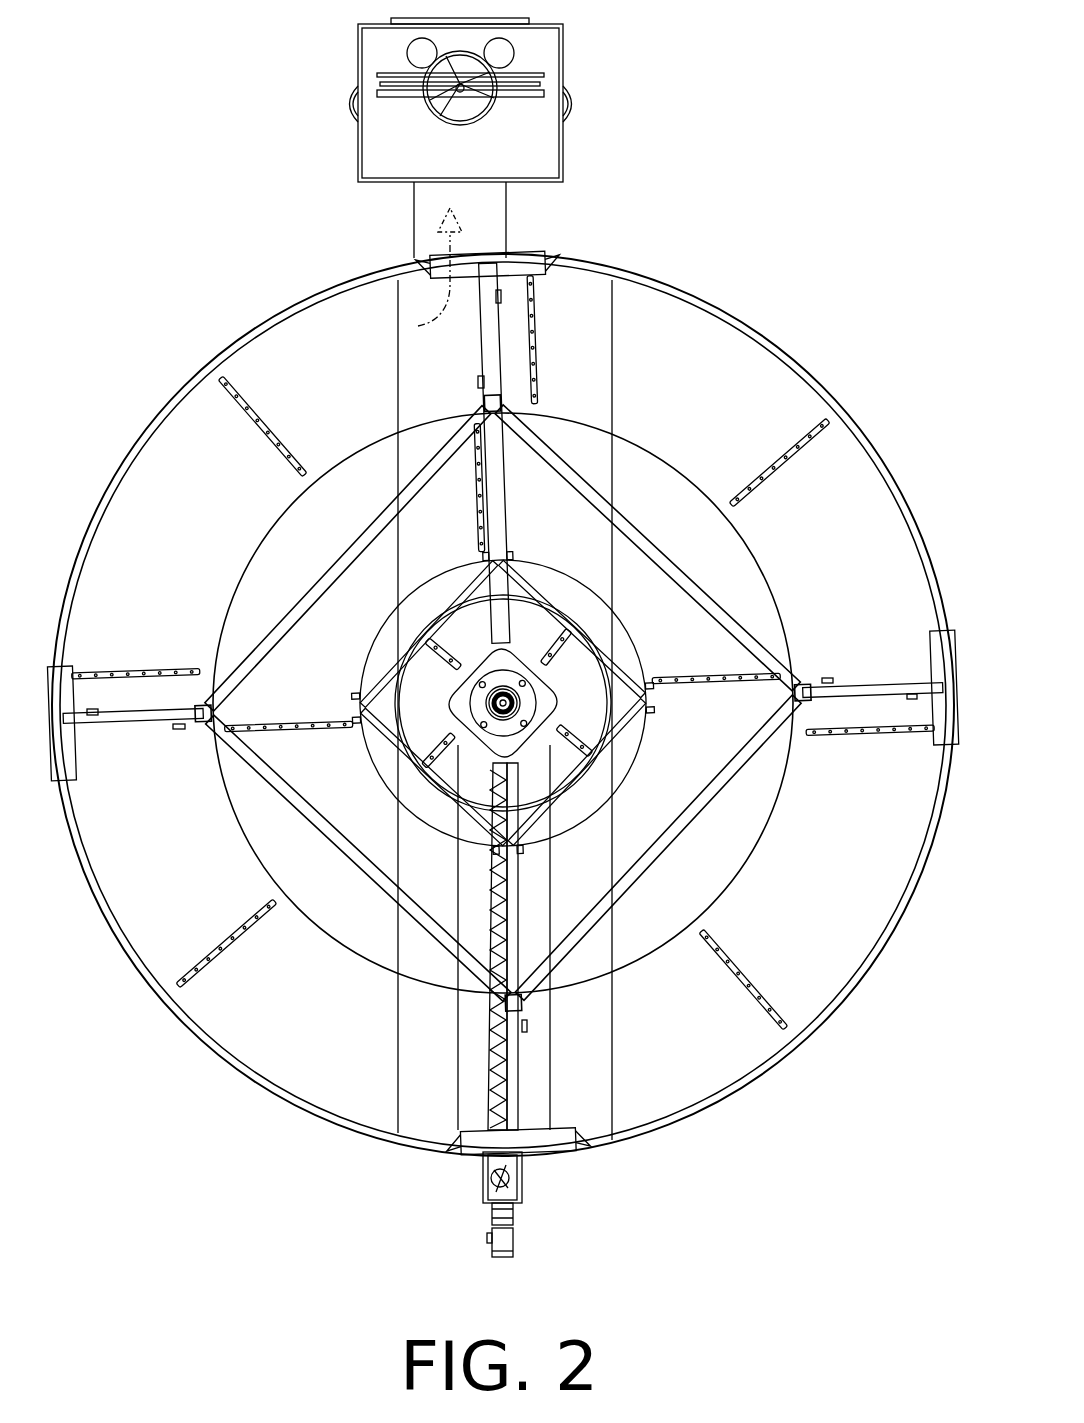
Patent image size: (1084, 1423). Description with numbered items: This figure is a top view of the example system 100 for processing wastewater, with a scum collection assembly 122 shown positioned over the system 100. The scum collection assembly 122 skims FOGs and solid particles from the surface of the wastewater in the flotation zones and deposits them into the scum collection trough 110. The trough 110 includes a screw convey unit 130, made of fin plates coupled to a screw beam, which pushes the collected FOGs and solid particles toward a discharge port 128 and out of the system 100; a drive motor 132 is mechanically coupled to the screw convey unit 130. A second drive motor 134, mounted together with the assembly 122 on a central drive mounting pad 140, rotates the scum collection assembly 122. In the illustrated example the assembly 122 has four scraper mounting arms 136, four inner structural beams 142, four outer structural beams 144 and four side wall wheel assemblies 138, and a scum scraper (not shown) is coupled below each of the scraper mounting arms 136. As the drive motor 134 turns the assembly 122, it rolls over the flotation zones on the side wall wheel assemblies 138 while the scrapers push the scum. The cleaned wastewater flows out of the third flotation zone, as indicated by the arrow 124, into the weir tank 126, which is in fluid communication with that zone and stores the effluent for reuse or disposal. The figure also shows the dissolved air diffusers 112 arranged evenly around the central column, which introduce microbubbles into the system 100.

The system for processing wastewater 100 is at (772, 216).
The scum collection trough 110 is at (485, 1221).
The dissolved air diffusers 112 is at (567, 665).
The scum collection assembly 122 is at (699, 843).
The wastewater flow out of the third flotation zone 124 is at (460, 319).
The weir tank 126 is at (583, 119).
The discharge port 128 is at (513, 1201).
The screw convey unit 130 is at (487, 1035).
The drive motor 132 is at (519, 1259).
The drive motor 134 is at (519, 662).
The scraper mounting arms 136 is at (469, 382).
The side wall wheel assemblies 138 is at (535, 239).
The central drive mounting pad 140 is at (535, 765).
The inner structural beams 142 is at (413, 616).
The outer structural beams 144 is at (308, 577).